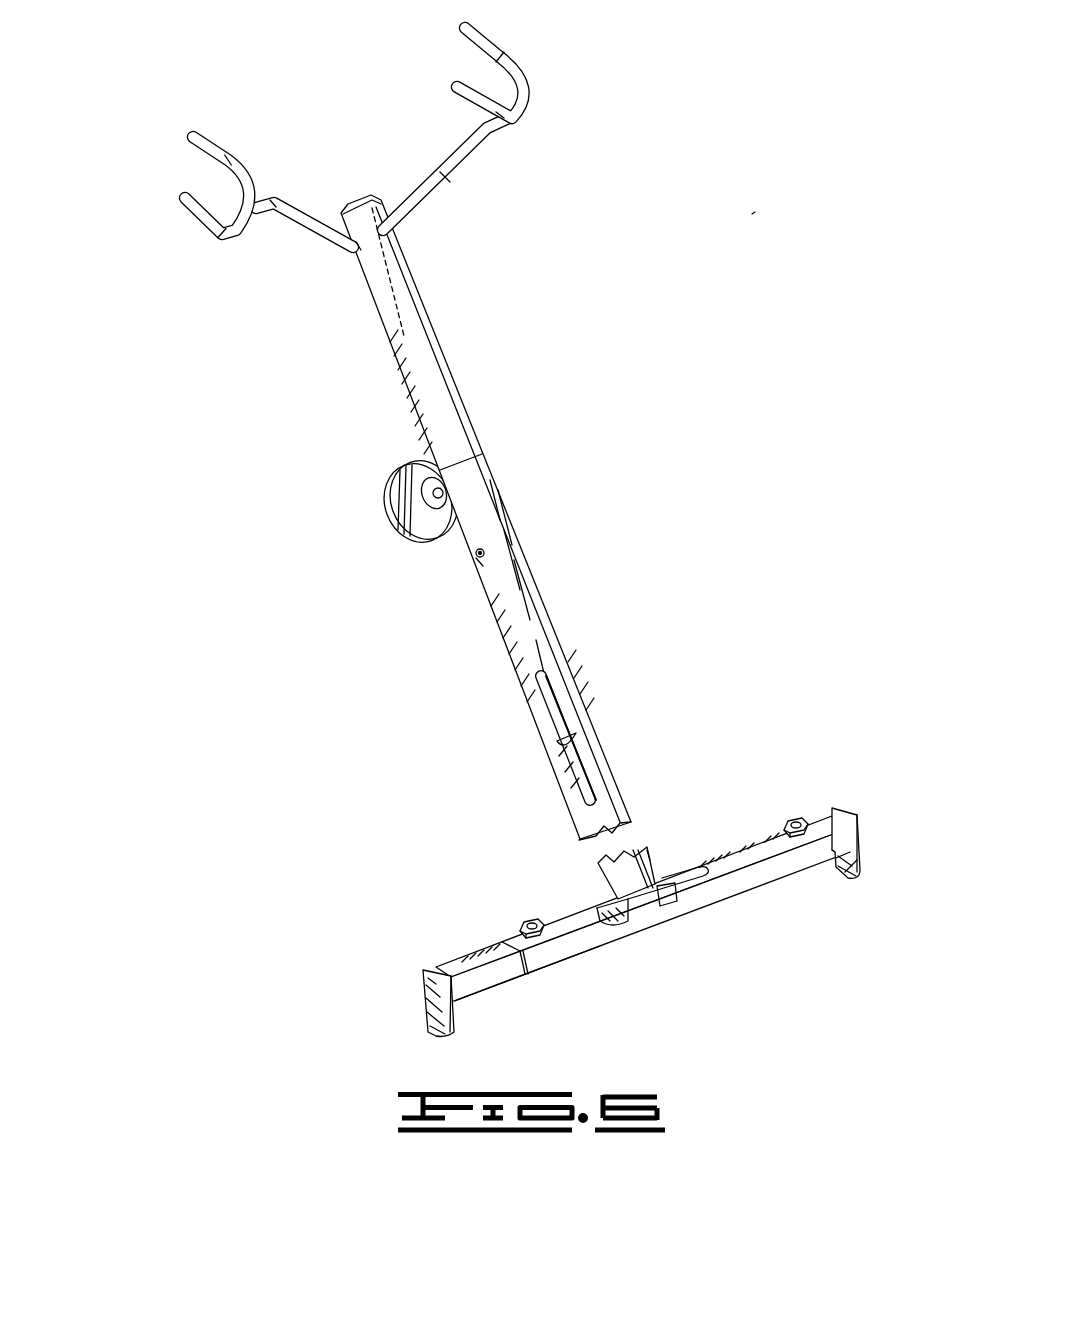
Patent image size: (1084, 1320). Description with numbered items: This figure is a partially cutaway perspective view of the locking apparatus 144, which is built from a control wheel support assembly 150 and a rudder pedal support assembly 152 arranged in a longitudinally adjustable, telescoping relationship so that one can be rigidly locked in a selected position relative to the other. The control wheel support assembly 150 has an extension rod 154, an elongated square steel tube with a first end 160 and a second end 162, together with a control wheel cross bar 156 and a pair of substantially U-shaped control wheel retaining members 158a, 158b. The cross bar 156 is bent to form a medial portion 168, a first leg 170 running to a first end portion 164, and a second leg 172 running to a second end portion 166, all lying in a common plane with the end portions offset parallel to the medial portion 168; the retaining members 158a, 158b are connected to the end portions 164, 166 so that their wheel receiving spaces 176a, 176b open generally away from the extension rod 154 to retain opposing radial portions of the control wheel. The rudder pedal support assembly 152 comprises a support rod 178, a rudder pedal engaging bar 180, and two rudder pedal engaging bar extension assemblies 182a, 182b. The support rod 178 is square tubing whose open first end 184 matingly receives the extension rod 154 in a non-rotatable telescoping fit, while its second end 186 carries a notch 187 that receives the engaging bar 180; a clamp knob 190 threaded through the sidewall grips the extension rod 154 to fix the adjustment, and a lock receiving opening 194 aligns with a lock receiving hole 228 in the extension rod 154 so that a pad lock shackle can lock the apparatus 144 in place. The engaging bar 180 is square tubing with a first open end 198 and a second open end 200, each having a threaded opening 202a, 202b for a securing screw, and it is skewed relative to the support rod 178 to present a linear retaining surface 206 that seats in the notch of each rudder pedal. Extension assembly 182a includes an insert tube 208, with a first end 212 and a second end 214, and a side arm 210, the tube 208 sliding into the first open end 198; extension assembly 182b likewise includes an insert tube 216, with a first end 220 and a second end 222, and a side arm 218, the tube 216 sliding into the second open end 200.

The locking apparatus 144 is at (752, 214).
The control wheel support assembly 150 is at (428, 340).
The rudder pedal support assembly 152 is at (606, 746).
The extension rod 154 is at (412, 305).
The control wheel cross bar 156 is at (456, 148).
The control wheel retaining member 158a is at (193, 214).
The control wheel retaining member 158b is at (512, 62).
The first end 160 is at (376, 212).
The second end 162 is at (558, 761).
The first end portion 164 is at (271, 203).
The second end portion 166 is at (514, 122).
The medial portion 168 is at (352, 254).
The first leg 170 is at (312, 230).
The second leg 172 is at (447, 180).
The wheel receiving space 176a is at (220, 214).
The wheel receiving space 176b is at (489, 129).
The support rod 178 is at (551, 600).
The rudder pedal engaging bar 180 is at (760, 893).
The rudder pedal engaging bar extension assembly 182a is at (440, 960).
The rudder pedal engaging bar extension assembly 182b is at (826, 812).
The first end 184 is at (484, 486).
The second end 186 is at (650, 868).
The notch 187 is at (600, 870).
The clamp knob 190 is at (396, 490).
The lock receiving opening 194 is at (484, 568).
The first open end 198 is at (504, 944).
The second open end 200 is at (782, 836).
The threaded opening 202a is at (529, 918).
The threaded opening 202b is at (795, 817).
The linear retaining surface 206 is at (620, 937).
The insert tube 208 is at (494, 990).
The side arm 210 is at (428, 1004).
The first end 212 is at (638, 907).
The second end 214 is at (468, 1006).
The insert tube 216 is at (863, 878).
The side arm 218 is at (858, 849).
The first end 220 is at (692, 895).
The second end 222 is at (842, 828).
The lock receiving hole 228 is at (477, 556).